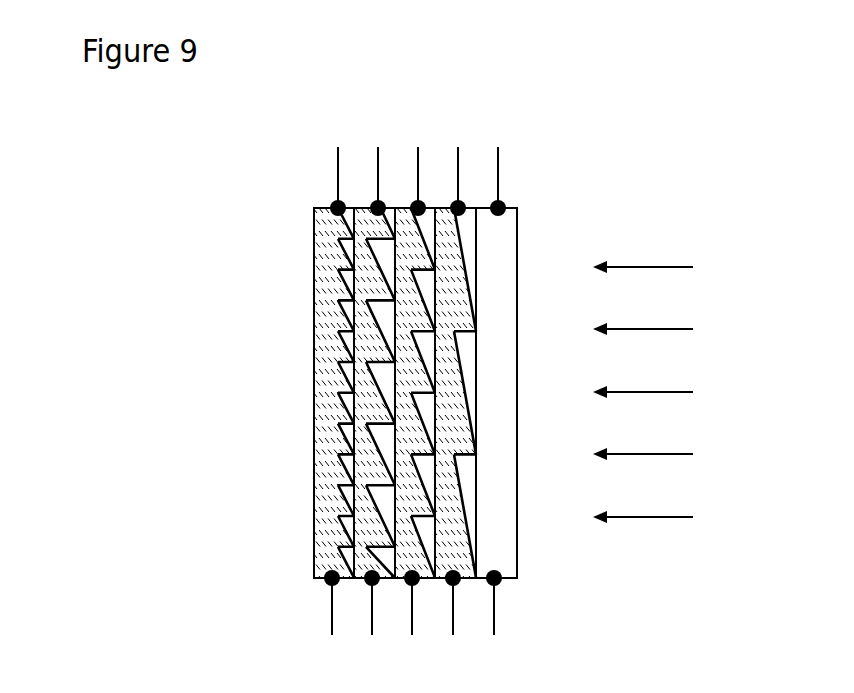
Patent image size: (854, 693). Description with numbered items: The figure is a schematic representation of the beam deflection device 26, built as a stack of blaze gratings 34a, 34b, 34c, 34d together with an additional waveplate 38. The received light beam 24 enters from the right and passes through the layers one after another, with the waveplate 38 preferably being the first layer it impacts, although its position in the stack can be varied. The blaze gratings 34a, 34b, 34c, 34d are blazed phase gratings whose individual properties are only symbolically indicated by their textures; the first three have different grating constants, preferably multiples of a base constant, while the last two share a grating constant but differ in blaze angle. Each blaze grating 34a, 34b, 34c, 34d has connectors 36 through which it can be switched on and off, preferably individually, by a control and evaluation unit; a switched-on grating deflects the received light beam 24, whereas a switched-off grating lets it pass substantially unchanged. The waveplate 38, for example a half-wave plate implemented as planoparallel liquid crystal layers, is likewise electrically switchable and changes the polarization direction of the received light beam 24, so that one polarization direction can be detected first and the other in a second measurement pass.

The received light beam 24 is at (672, 430).
The beam deflection device 26 is at (527, 189).
The blaze grating 34a is at (437, 268).
The blaze grating 34b is at (437, 328).
The blaze grating 34c is at (413, 387).
The blaze grating 34d is at (328, 462).
The connectors 36 is at (333, 205).
The waveplate 38 is at (500, 293).